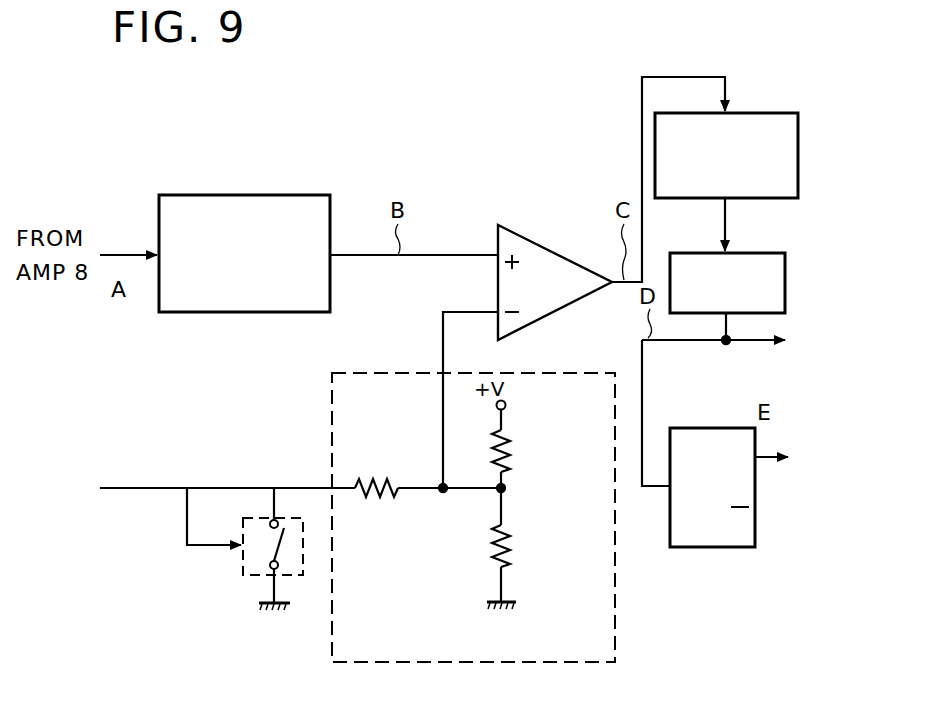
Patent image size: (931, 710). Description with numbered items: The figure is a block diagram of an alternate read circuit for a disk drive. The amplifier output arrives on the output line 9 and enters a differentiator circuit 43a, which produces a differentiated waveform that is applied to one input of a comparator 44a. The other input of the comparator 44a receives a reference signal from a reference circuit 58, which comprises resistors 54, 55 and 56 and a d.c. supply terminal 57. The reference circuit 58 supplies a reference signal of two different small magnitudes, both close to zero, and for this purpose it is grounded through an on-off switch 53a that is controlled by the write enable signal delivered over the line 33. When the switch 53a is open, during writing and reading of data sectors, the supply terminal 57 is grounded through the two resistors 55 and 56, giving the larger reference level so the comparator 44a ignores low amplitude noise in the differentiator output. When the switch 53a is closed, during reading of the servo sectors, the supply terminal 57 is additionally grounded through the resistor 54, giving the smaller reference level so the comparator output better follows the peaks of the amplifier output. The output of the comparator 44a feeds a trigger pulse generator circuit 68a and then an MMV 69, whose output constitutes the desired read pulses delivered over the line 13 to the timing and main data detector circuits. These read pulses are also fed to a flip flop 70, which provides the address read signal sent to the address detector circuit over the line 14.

The output line 9 is at (120, 276).
The differentiator circuit 43a is at (243, 195).
The comparator 44a is at (547, 249).
The trigger pulse generator circuit 68a is at (768, 111).
The MMV 69 is at (766, 252).
The output line (signal D) 13 is at (752, 343).
The flip flop 70 is at (710, 428).
The line 14 is at (765, 425).
The reference circuit 58 is at (617, 579).
The resistor 54 is at (379, 480).
The resistor 55 is at (508, 450).
The resistor 56 is at (508, 539).
The d.c. supply terminal 57 is at (506, 407).
The line 33 is at (140, 493).
The on-off switch 53a is at (253, 516).